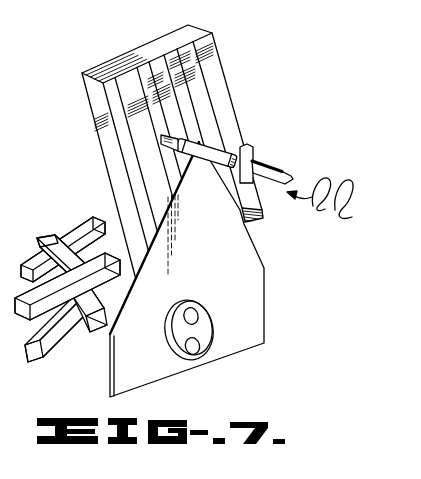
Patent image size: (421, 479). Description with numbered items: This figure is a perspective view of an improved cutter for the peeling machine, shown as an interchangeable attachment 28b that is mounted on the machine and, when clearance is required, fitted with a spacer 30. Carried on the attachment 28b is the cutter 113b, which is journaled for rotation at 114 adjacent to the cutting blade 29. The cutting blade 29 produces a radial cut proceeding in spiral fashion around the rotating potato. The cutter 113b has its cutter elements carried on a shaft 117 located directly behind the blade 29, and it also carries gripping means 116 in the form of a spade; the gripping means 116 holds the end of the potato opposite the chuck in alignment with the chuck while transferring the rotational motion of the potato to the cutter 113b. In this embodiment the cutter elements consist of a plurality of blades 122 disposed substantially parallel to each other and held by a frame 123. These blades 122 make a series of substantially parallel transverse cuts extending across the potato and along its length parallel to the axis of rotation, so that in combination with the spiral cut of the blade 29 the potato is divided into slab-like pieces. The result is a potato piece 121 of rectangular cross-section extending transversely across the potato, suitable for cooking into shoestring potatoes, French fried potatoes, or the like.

The cutter 113b is at (240, 95).
The blades 122 is at (170, 97).
The frame 123 is at (123, 62).
The attachment 28b is at (272, 301).
The spacer 30 is at (201, 318).
The cutting blade 29 is at (245, 228).
The journal 114 is at (195, 140).
The shaft 117 is at (162, 142).
The gripping means 116 is at (264, 169).
The potato piece 121 is at (67, 299).